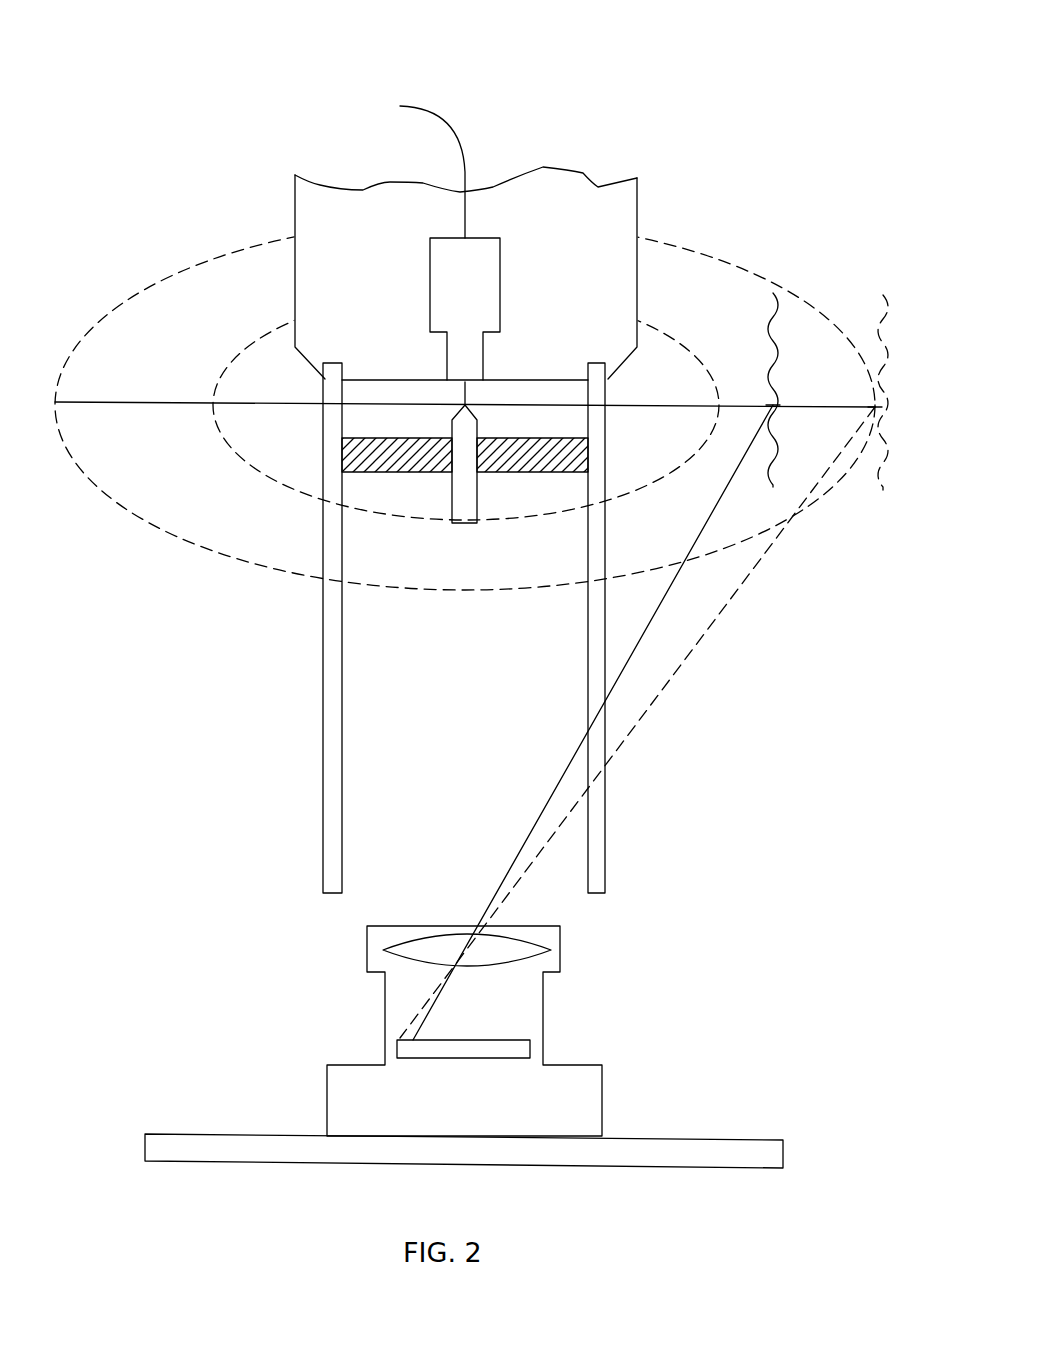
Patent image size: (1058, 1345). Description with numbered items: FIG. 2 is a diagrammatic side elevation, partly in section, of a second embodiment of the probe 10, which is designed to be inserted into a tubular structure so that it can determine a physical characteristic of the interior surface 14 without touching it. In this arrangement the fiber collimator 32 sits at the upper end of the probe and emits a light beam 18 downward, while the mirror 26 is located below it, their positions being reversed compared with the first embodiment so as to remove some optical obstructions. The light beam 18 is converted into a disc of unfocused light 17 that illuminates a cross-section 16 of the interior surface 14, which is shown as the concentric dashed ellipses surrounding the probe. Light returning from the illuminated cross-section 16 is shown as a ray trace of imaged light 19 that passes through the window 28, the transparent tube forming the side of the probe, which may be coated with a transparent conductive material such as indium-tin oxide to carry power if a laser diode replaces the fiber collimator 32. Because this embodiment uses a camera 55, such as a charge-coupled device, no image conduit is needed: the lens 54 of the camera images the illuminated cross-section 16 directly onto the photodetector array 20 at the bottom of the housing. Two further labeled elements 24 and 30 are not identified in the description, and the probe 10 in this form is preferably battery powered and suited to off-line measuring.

The probe 10 is at (574, 97).
The interior surface 14 is at (773, 338).
The cross-section 16 is at (773, 405).
The disc of unfocused light 17 is at (230, 357).
The light beam 18 is at (465, 402).
The imaged light 19 is at (687, 555).
The photodetector array 20 is at (522, 1050).
The mounting plate 24 is at (466, 404).
The mirror 26 is at (457, 510).
The window 28 is at (322, 746).
The fiber optic cable 30 is at (436, 115).
The fiber collimator 32 is at (486, 276).
The lens 54 is at (428, 945).
The camera 55 is at (545, 1005).